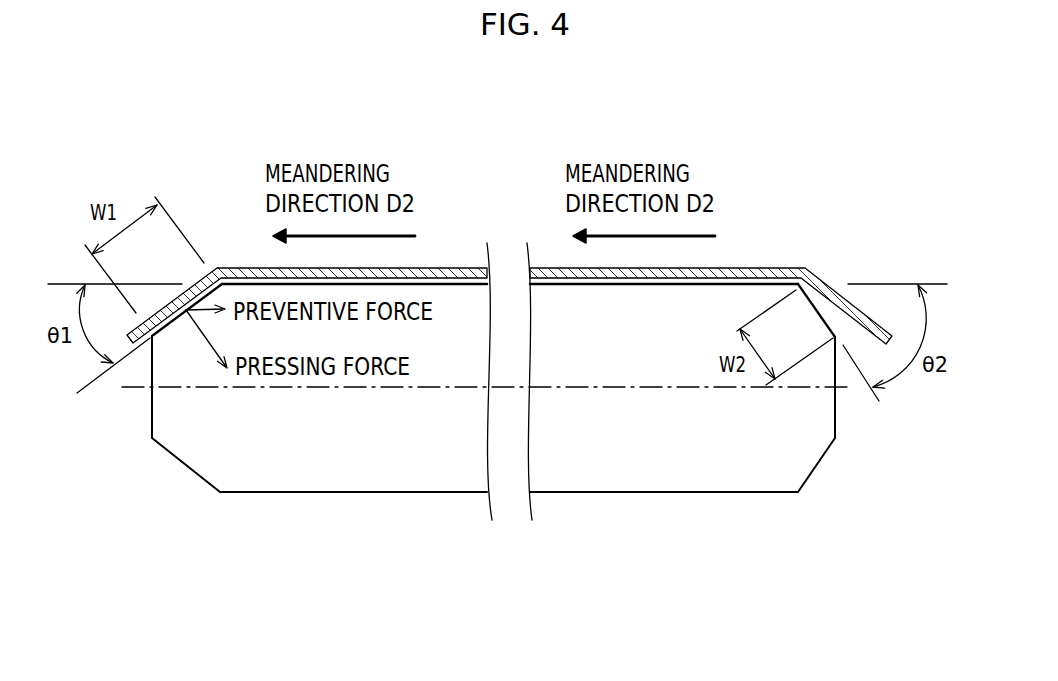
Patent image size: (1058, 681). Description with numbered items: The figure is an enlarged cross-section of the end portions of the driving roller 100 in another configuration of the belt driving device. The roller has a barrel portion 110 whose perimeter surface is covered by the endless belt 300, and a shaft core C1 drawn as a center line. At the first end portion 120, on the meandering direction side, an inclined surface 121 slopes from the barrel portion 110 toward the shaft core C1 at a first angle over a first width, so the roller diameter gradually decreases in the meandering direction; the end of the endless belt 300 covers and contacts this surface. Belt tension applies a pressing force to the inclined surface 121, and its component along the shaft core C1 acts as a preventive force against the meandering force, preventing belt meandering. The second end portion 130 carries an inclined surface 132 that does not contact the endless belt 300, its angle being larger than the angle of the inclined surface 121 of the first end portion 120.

The driving roller 100 is at (501, 454).
The barrel portion 110 is at (668, 532).
The first end portion 120 is at (166, 443).
The inclined surface 121 is at (178, 462).
The second end portion 130 is at (844, 443).
The inclined surface 132 is at (818, 463).
The endless belt 300 is at (758, 268).
The shaft core C1 is at (133, 388).